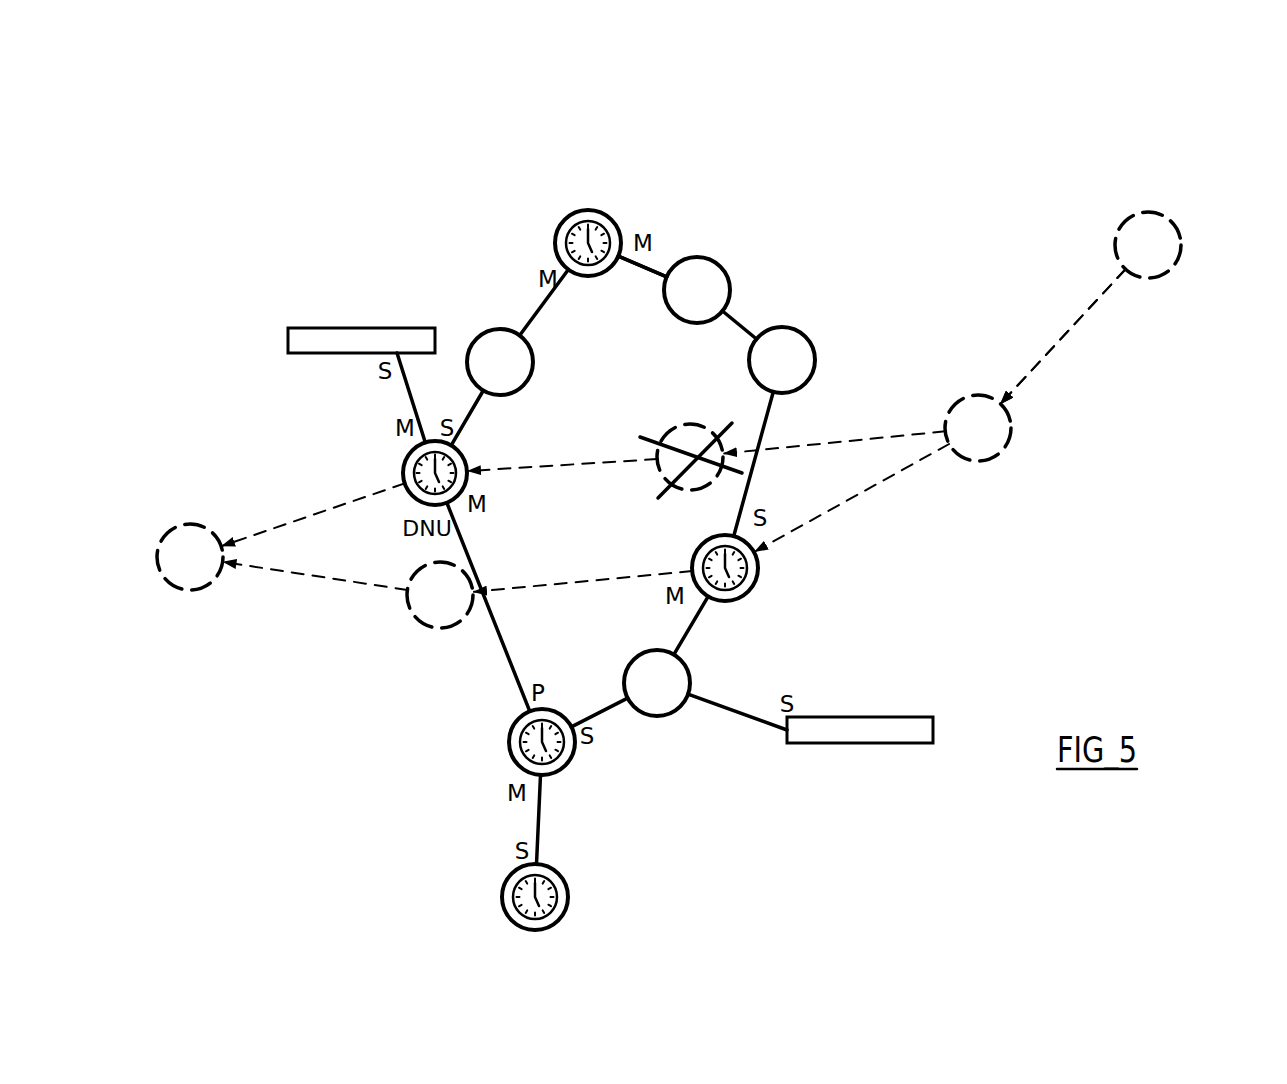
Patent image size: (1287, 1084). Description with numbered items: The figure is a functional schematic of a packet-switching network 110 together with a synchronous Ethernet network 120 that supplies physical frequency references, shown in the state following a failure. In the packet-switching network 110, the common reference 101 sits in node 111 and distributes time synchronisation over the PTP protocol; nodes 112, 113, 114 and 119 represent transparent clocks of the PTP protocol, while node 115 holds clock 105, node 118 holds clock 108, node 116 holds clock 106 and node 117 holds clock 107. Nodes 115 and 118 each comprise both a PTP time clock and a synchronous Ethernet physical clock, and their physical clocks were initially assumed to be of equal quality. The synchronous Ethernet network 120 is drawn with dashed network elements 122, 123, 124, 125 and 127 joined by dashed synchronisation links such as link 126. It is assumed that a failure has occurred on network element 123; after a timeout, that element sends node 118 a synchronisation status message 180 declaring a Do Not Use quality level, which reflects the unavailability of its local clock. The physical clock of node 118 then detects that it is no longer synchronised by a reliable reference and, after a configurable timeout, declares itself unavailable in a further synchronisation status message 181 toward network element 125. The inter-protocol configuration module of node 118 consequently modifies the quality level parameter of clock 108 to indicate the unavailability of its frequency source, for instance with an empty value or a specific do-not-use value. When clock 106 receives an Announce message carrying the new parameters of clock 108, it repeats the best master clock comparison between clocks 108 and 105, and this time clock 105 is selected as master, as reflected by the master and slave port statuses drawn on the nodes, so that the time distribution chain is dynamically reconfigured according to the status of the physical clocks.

The packet-switching network 110 is at (645, 193).
The synchronous Ethernet network 120 is at (1207, 227).
The common reference clock 101 is at (592, 222).
The clock of node 115 105 is at (702, 554).
The clock of node 116 106 is at (521, 755).
The clock of node 117 107 is at (512, 904).
The clock of node 118 108 is at (412, 473).
The node 111 is at (575, 213).
The node 112 is at (715, 258).
The node 113 is at (796, 327).
The node 114 is at (660, 717).
The node 115 is at (756, 588).
The node 116 is at (508, 735).
The node 117 is at (502, 882).
The node 118 is at (408, 452).
The node 119 is at (480, 330).
The network element 122 is at (966, 392).
The network element 123 is at (675, 431).
The network element 124 is at (408, 612).
The network element 125 is at (171, 525).
The synchronisation link 126 is at (1072, 328).
The network element 127 is at (1125, 216).
The synchronisation status message 180 is at (565, 462).
The synchronisation status message 181 is at (278, 515).